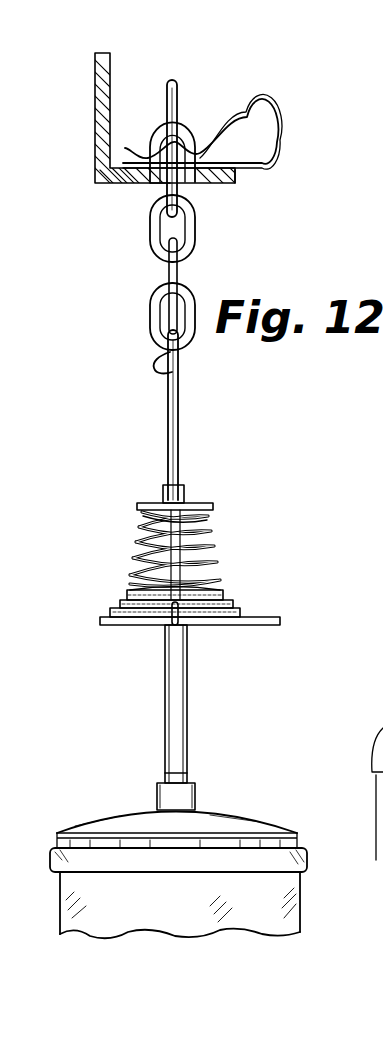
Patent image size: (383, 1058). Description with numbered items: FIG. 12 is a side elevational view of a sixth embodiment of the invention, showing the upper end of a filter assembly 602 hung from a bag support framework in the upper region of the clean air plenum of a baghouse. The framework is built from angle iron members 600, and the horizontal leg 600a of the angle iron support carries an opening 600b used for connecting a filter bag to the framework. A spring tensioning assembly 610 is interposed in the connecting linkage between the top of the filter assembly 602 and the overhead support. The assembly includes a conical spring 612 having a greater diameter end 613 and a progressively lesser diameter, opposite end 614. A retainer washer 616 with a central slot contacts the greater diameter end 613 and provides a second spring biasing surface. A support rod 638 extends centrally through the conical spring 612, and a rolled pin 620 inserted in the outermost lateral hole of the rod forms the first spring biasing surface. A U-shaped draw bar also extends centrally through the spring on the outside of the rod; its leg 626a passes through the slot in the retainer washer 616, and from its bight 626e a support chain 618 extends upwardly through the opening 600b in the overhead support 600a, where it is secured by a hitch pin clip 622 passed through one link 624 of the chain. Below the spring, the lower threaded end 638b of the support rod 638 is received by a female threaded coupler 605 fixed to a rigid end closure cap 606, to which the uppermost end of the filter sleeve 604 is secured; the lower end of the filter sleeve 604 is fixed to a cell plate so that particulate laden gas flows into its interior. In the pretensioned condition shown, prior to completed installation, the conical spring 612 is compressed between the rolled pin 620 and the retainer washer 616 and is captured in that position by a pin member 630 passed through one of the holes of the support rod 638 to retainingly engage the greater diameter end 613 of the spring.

The angle iron member 600 is at (90, 101).
The horizontal leg 600a is at (237, 181).
The opening 600b is at (150, 183).
The filter assembly 602 is at (122, 806).
The filter sleeve 604 is at (60, 916).
The female threaded coupler 605 is at (196, 797).
The end closure cap 606 is at (293, 837).
The spring tensioning assembly 610 is at (240, 546).
The conical spring 612 is at (135, 545).
The greater diameter end 613 is at (118, 610).
The lesser diameter end 614 is at (143, 518).
The retainer washer 616 is at (238, 612).
The support chain 618 is at (198, 238).
The rolled pin 620 is at (213, 506).
The hitch pin clip 622 is at (262, 128).
The chain link 624 is at (181, 196).
The draw bar leg 626a is at (178, 425).
The bight of draw bar 626e is at (176, 373).
The pin member 630 is at (280, 622).
The support rod 638 is at (187, 682).
The lower threaded end 638b is at (190, 778).